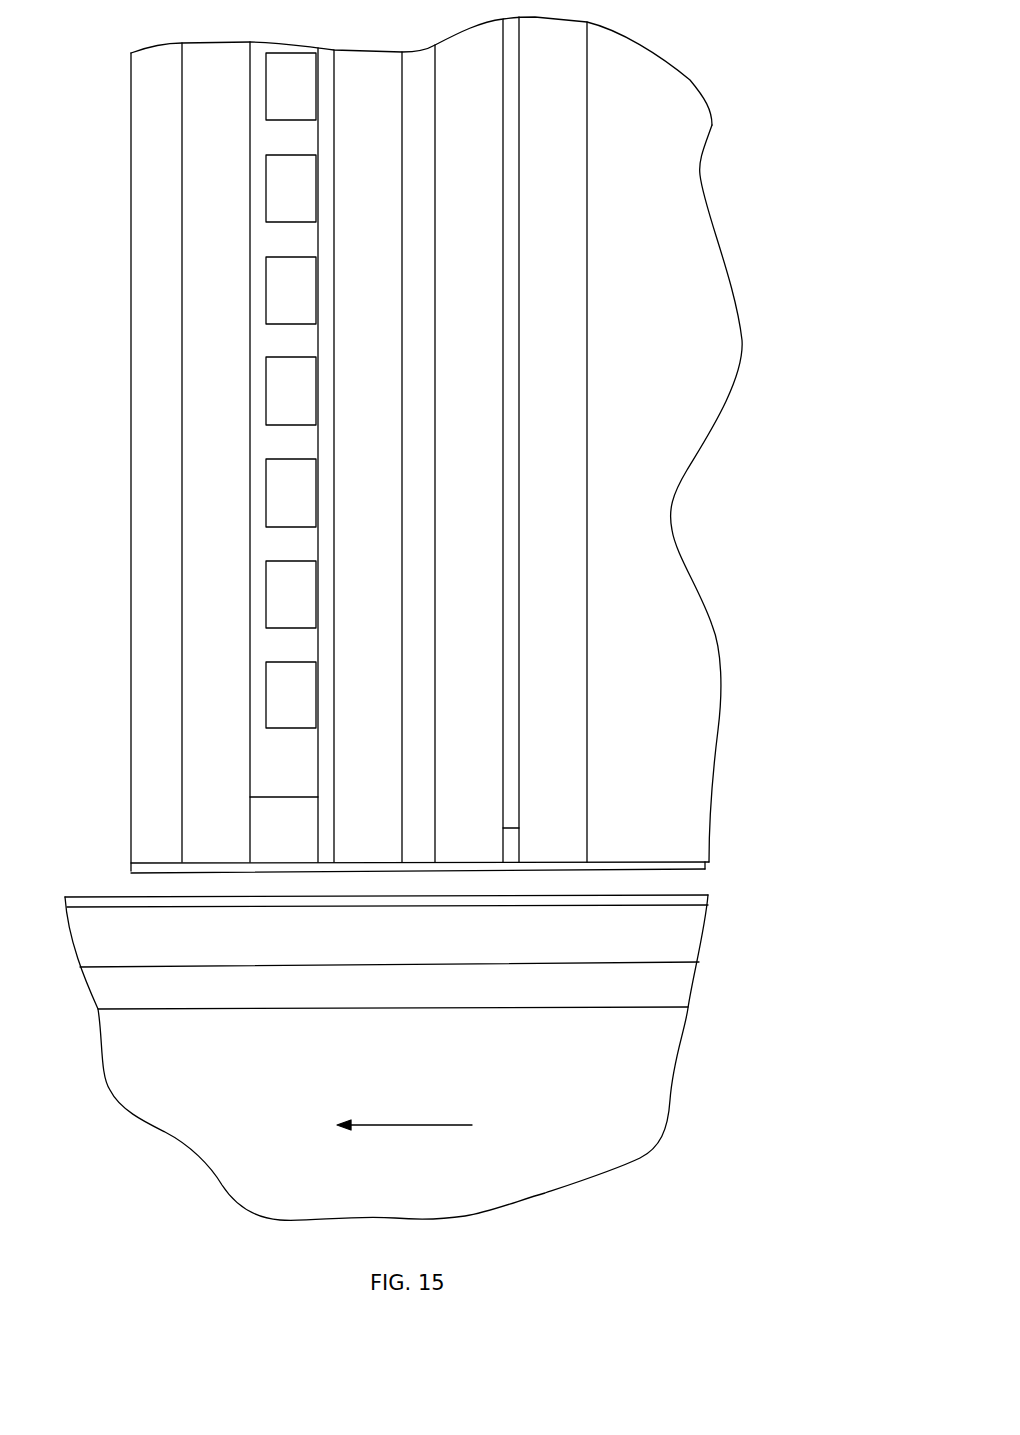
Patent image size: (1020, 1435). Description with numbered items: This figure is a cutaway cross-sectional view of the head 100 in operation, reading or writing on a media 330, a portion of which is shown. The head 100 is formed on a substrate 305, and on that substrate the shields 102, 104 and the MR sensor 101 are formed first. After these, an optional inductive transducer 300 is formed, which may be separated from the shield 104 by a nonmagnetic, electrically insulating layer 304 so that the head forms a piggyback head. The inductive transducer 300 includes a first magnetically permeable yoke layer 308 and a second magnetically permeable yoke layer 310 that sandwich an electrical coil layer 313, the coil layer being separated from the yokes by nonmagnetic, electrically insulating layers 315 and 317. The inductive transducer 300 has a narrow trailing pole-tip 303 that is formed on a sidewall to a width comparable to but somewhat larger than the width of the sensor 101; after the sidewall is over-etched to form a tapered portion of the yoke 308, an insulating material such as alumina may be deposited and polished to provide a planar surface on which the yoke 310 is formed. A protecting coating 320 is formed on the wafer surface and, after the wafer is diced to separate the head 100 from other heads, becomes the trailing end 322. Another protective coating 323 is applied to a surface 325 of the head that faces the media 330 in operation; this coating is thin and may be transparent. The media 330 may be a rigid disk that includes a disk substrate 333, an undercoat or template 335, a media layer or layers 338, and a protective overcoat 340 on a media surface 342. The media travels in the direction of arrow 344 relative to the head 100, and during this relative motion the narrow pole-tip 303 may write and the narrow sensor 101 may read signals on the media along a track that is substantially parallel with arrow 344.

The head 100 is at (752, 422).
The MR sensor 101 is at (517, 848).
The shield 102 is at (574, 494).
The shield 104 is at (489, 334).
The inductive transducer 300 is at (153, 763).
The narrow trailing pole-tip 303 is at (304, 844).
The nonmagnetic, electrically insulating layer 304 is at (418, 629).
The substrate 305 is at (674, 674).
The first magnetically permeable yoke layer 308 is at (387, 354).
The second magnetically permeable yoke layer 310 is at (235, 467).
The electrical coil layer 313 is at (272, 192).
The nonmagnetic, electrically insulating layer 315 is at (332, 556).
The nonmagnetic, electrically insulating layer 317 is at (300, 141).
The protecting coating 320 is at (176, 637).
The trailing end 322 is at (120, 528).
The protective coating 323 is at (640, 861).
The surface 325 is at (405, 885).
The media 330 is at (178, 1190).
The disk substrate 333 is at (457, 1074).
The undercoat or template 335 is at (258, 1008).
The media layer 338 is at (605, 953).
The protective overcoat 340 is at (203, 908).
The media surface 342 is at (98, 886).
The arrow 344 is at (400, 1128).